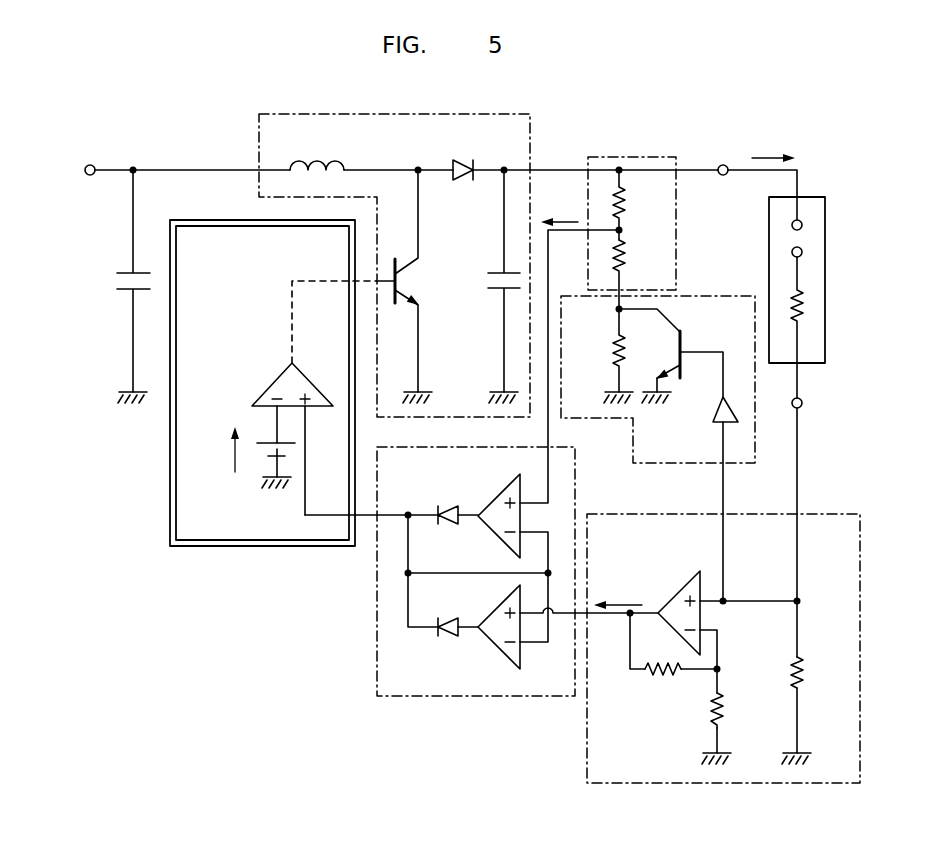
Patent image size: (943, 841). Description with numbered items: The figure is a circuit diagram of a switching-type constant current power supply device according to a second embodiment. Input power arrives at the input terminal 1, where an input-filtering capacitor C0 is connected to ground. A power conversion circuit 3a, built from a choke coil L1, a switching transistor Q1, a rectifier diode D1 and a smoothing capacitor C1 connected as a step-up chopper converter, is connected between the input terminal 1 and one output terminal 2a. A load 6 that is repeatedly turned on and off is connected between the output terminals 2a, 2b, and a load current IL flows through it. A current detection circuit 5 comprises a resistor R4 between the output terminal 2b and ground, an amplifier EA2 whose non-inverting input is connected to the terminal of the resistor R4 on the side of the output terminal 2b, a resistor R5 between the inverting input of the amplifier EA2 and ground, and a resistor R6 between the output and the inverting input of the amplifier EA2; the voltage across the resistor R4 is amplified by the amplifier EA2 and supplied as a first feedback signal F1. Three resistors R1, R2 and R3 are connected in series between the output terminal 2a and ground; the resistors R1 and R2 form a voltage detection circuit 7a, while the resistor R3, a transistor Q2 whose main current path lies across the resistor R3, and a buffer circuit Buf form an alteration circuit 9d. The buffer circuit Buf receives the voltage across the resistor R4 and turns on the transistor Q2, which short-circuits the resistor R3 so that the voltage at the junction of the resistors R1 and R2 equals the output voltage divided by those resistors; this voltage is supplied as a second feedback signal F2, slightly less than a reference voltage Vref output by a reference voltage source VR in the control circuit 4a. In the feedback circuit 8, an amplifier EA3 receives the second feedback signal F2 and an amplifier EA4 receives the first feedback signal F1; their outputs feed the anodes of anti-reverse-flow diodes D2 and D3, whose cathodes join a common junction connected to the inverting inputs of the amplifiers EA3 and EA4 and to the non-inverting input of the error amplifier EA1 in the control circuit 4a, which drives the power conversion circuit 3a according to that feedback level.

The input terminal 1 is at (90, 165).
The input-filtering capacitor C0 is at (113, 281).
The power conversion circuit 3a is at (349, 265).
The choke coil L1 is at (320, 160).
The rectifier diode D1 is at (467, 160).
The switching transistor Q1 is at (432, 286).
The smoothing capacitor C1 is at (488, 280).
The voltage detection circuit 7a is at (632, 190).
The resistor R1 is at (625, 205).
The resistor R2 is at (625, 256).
The output terminal 2a is at (723, 163).
The load current IL is at (768, 157).
The load 6 is at (825, 218).
The output terminal 2b is at (803, 403).
The second feedback signal F2 is at (567, 221).
The alteration circuit 9d is at (658, 345).
The resistor R3 is at (612, 348).
The transistor Q2 is at (690, 352).
The buffer circuit Buf is at (713, 411).
The control circuit 4a is at (230, 546).
The error amplifier EA1 is at (268, 392).
The reference voltage source VR is at (255, 455).
The reference voltage Vref is at (235, 455).
The feedback circuit 8 is at (443, 571).
The anti-reverse-flow diode D2 is at (453, 527).
The anti-reverse-flow diode D3 is at (453, 618).
The amplifier EA3 is at (497, 495).
The amplifier EA4 is at (502, 657).
The current detection circuit 5 is at (723, 614).
The amplifier EA2 is at (693, 587).
The first feedback signal F1 is at (627, 604).
The resistor R6 is at (648, 675).
The resistor R5 is at (710, 715).
The resistor R4 is at (804, 675).